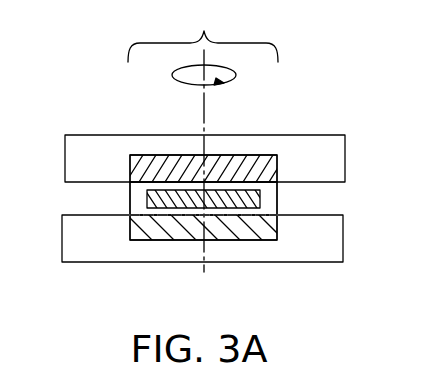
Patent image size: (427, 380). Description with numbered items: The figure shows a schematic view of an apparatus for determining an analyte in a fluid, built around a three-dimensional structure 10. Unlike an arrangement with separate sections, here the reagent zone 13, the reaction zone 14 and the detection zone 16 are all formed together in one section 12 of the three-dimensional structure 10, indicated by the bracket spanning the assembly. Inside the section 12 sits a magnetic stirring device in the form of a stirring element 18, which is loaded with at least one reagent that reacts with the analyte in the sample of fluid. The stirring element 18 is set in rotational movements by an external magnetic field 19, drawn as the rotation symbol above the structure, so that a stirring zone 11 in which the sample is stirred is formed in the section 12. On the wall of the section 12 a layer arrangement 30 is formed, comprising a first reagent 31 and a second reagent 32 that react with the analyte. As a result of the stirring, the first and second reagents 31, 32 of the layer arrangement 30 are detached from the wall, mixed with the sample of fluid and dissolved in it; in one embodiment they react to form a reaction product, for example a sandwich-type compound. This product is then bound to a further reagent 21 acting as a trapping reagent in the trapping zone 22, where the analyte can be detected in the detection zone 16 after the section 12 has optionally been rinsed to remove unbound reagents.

The three-dimensional structure 10 is at (73, 183).
The stirring zone 11 is at (247, 214).
The section 12 is at (203, 32).
The reagent zone 13 is at (128, 180).
The reaction zone 14 is at (128, 187).
The detection zone 16 is at (278, 196).
The stirring element 18 is at (148, 198).
The external magnetic field 19 is at (236, 75).
The further reagent 21 is at (182, 240).
The trapping zone 22 is at (145, 240).
The layer arrangement 30 is at (253, 163).
The first reagent 31 is at (155, 162).
The second reagent 32 is at (275, 168).